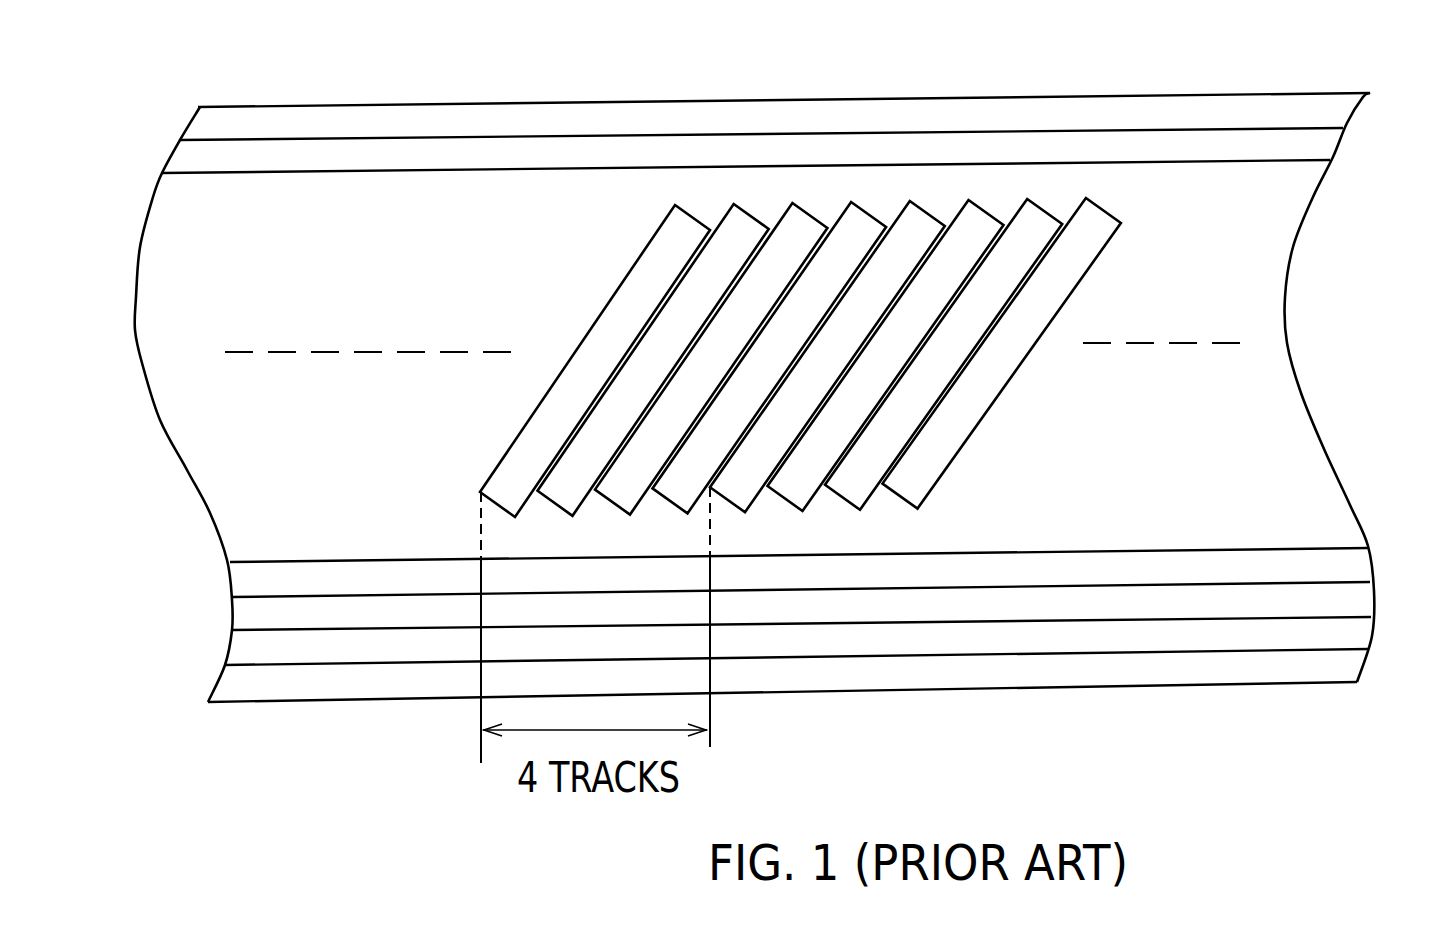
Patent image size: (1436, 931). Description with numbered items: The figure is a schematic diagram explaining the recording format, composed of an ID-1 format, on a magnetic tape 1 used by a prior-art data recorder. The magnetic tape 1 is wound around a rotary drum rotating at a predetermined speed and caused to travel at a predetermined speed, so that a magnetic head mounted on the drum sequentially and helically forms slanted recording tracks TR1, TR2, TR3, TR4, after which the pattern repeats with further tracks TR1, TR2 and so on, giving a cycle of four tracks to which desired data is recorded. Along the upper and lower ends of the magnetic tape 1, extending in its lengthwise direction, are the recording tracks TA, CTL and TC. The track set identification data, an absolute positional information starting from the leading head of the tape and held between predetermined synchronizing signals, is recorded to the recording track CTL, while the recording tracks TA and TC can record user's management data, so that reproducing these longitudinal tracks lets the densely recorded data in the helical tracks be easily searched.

The magnetic tape 1 is at (1270, 303).
The recording track TA is at (1303, 148).
The recording track CTL is at (1105, 557).
The recording track TC is at (1107, 632).
The recording track TR1 is at (683, 207).
The recording track TR2 is at (753, 217).
The recording track TR3 is at (817, 213).
The recording track TR4 is at (872, 213).